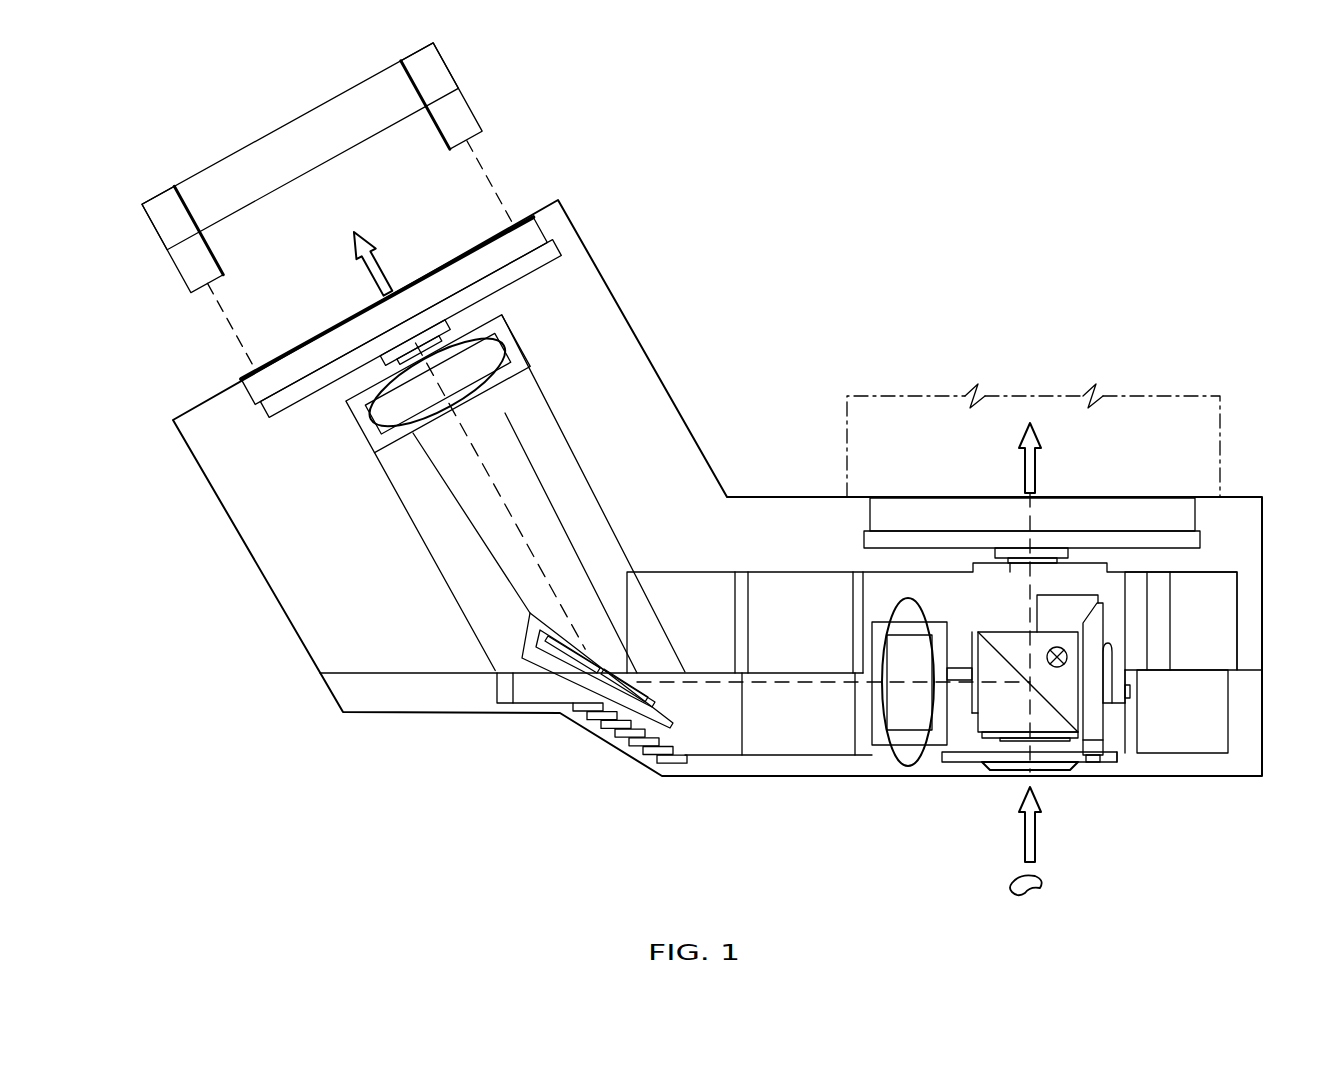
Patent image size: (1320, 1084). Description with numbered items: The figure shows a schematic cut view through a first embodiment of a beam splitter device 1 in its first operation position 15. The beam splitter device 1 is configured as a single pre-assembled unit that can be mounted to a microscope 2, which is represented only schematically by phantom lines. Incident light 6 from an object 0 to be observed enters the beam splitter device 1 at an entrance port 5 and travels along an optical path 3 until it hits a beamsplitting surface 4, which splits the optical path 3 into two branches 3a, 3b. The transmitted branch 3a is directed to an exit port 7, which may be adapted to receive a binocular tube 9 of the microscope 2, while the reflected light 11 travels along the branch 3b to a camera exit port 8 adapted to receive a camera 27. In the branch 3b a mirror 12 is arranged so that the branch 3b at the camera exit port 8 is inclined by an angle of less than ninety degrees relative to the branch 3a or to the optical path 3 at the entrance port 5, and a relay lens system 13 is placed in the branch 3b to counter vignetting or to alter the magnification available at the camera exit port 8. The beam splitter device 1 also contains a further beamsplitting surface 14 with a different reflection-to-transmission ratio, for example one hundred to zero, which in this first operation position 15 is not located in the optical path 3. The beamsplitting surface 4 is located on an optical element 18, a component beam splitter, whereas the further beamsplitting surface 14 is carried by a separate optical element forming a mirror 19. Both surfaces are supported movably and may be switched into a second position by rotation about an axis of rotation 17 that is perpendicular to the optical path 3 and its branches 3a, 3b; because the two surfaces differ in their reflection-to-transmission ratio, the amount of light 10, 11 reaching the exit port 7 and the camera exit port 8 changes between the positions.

The object 0 is at (1045, 886).
The beam splitter device 1 is at (757, 369).
The microscope 2 is at (1196, 398).
The binocular tube 9 is at (1036, 422).
The optical path 3 is at (1042, 772).
The branch of the optical path 3a is at (1035, 532).
The branch of the optical path 3b is at (407, 323).
The beamsplitting surface 4 is at (1018, 662).
The entrance port 5 is at (1088, 777).
The incident light 6 is at (1022, 848).
The exit port 7 is at (910, 478).
The camera exit port 8 is at (487, 210).
The light 10 is at (1037, 450).
The reflected light 11 is at (383, 270).
The mirror 12 is at (576, 726).
The relay lens system 13 is at (900, 742).
The further beamsplitting surface 14 is at (1103, 715).
The first operation position 15 is at (1107, 602).
The axis of rotation 17 is at (1062, 652).
The optical element 18 is at (977, 740).
The mirror 19 is at (1120, 762).
The camera 27 is at (302, 170).